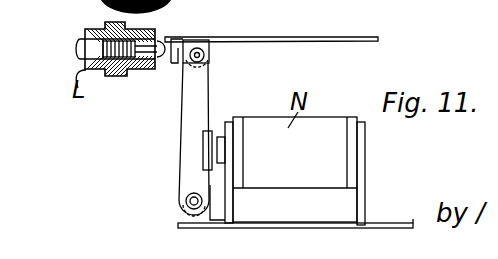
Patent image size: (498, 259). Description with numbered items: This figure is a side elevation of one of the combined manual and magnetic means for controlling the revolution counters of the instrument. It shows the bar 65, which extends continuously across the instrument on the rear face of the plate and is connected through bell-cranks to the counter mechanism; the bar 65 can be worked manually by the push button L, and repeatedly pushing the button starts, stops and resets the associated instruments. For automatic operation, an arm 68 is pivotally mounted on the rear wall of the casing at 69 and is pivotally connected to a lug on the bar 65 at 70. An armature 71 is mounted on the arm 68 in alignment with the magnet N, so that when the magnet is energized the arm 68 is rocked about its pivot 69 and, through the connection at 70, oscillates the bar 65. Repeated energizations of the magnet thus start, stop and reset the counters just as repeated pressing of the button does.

The bar 65 is at (285, 37).
The arm 68 is at (182, 126).
The pivot on rear wall of casing 69 is at (188, 203).
The pivotal connection to lug on bar 70 is at (196, 56).
The armature 71 is at (204, 160).